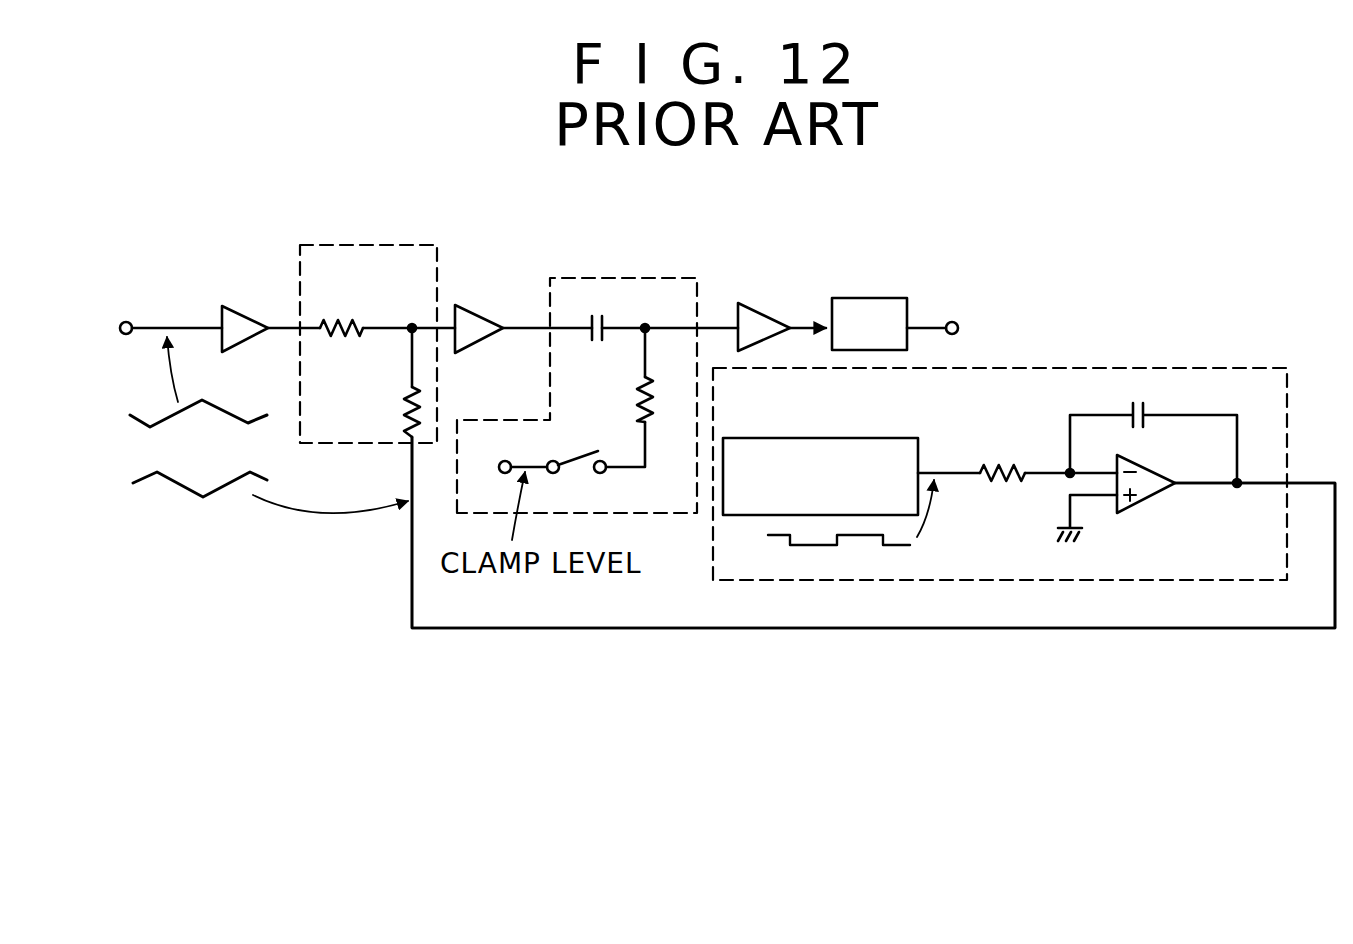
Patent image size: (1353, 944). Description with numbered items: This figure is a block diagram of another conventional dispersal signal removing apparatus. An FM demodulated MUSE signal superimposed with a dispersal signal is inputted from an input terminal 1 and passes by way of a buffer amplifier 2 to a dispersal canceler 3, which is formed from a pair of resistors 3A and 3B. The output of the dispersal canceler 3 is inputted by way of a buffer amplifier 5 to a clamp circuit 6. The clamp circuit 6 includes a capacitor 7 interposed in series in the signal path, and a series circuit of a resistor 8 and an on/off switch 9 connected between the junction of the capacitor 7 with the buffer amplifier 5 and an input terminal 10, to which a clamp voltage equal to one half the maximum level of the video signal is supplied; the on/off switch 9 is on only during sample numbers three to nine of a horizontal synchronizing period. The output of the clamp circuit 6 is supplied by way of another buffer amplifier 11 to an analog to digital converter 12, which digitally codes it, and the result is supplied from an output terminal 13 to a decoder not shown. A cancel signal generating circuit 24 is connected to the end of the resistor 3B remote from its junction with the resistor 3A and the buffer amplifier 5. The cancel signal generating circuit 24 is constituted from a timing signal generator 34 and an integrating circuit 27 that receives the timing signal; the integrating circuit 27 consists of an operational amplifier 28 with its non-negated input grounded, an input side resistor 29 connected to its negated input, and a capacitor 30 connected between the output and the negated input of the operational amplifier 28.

The input terminal 1 is at (126, 321).
The buffer amplifier 2 is at (246, 306).
The dispersal canceler 3 is at (375, 245).
The resistor 3A is at (347, 320).
The resistor 3B is at (404, 406).
The buffer amplifier 5 is at (480, 305).
The clamp circuit 6 is at (580, 278).
The capacitor 7 is at (588, 337).
The resistor 8 is at (653, 403).
The on/off switch 9 is at (584, 455).
The input terminal 10 is at (505, 460).
The buffer amplifier 11 is at (762, 303).
The analog to digital converter 12 is at (880, 298).
The output terminal 13 is at (953, 321).
The cancel signal generating circuit 24 is at (1063, 366).
The integrating circuit 27 is at (1036, 528).
The operational amplifier 28 is at (1155, 497).
The input side resistor 29 is at (1000, 466).
The capacitor 30 is at (1132, 407).
The timing signal generator 34 is at (883, 438).